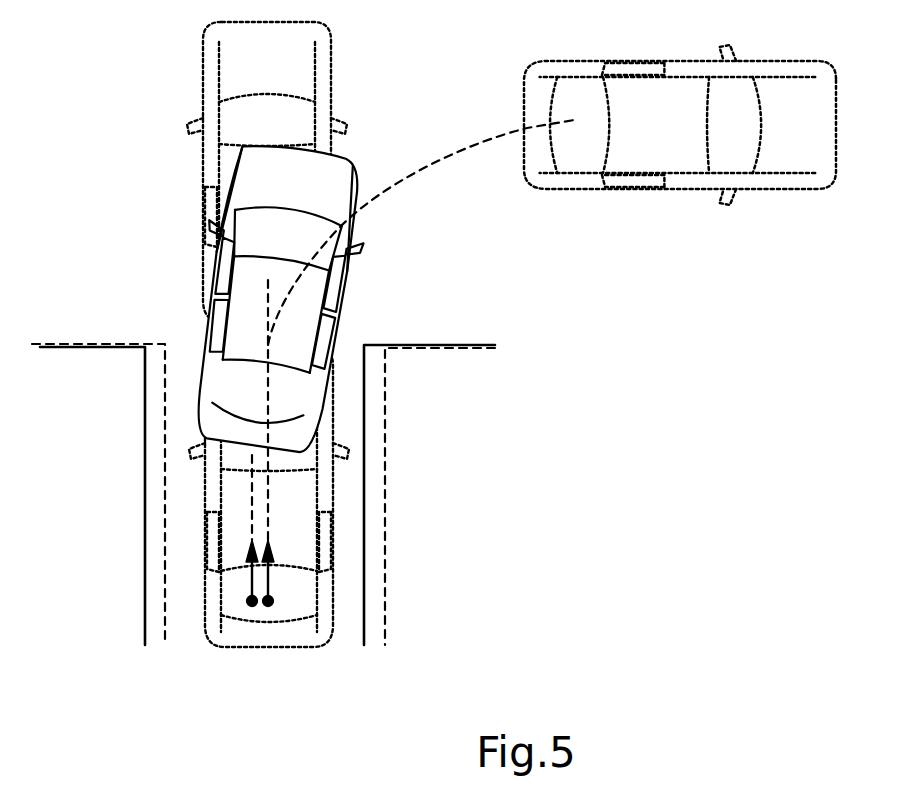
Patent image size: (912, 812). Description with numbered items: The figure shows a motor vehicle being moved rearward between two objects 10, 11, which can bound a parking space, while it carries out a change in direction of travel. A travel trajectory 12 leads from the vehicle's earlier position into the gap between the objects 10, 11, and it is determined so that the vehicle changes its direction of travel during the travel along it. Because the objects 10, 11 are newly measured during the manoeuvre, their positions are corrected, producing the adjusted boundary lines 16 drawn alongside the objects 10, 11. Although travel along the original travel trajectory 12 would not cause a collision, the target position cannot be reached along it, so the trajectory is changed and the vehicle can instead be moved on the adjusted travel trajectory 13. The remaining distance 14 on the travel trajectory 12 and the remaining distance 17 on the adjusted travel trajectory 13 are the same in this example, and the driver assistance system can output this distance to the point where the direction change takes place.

The object 10 is at (145, 640).
The object 11 is at (365, 640).
The travel trajectory 12 is at (443, 155).
The adjusted travel trajectory 13 is at (268, 485).
The remaining distance 14 is at (247, 584).
The adjusted boundary lines 16 is at (155, 345).
The remaining distance 17 is at (273, 584).